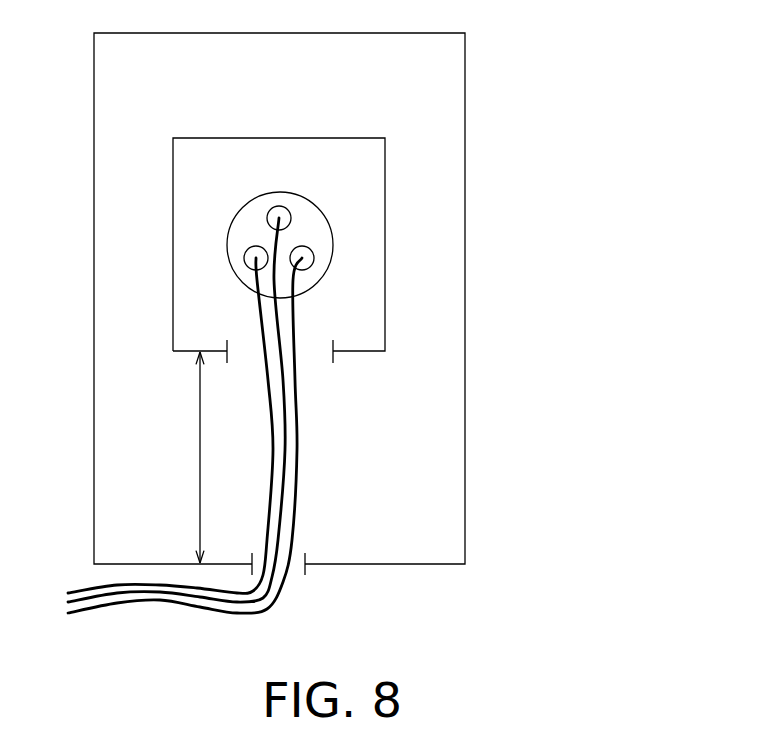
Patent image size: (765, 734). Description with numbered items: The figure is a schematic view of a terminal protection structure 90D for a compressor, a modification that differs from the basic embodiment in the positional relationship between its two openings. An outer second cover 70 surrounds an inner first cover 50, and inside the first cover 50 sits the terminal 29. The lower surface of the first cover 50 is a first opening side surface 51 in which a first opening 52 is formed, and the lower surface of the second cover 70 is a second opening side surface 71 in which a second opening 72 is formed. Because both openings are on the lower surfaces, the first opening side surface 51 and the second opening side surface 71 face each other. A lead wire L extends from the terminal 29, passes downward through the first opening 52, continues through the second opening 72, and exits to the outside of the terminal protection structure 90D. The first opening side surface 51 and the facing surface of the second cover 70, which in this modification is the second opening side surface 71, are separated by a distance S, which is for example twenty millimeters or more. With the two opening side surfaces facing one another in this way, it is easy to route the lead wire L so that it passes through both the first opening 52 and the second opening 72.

The terminal protection structure 90D is at (573, 83).
The second cover 70 is at (465, 310).
The second opening side surface 71 is at (358, 565).
The second opening 72 is at (305, 572).
The first cover 50 is at (358, 138).
The first opening side surface 51 is at (363, 352).
The first opening 52 is at (228, 352).
The terminal 29 is at (338, 210).
The lead wire L is at (300, 465).
The distance S is at (187, 457).